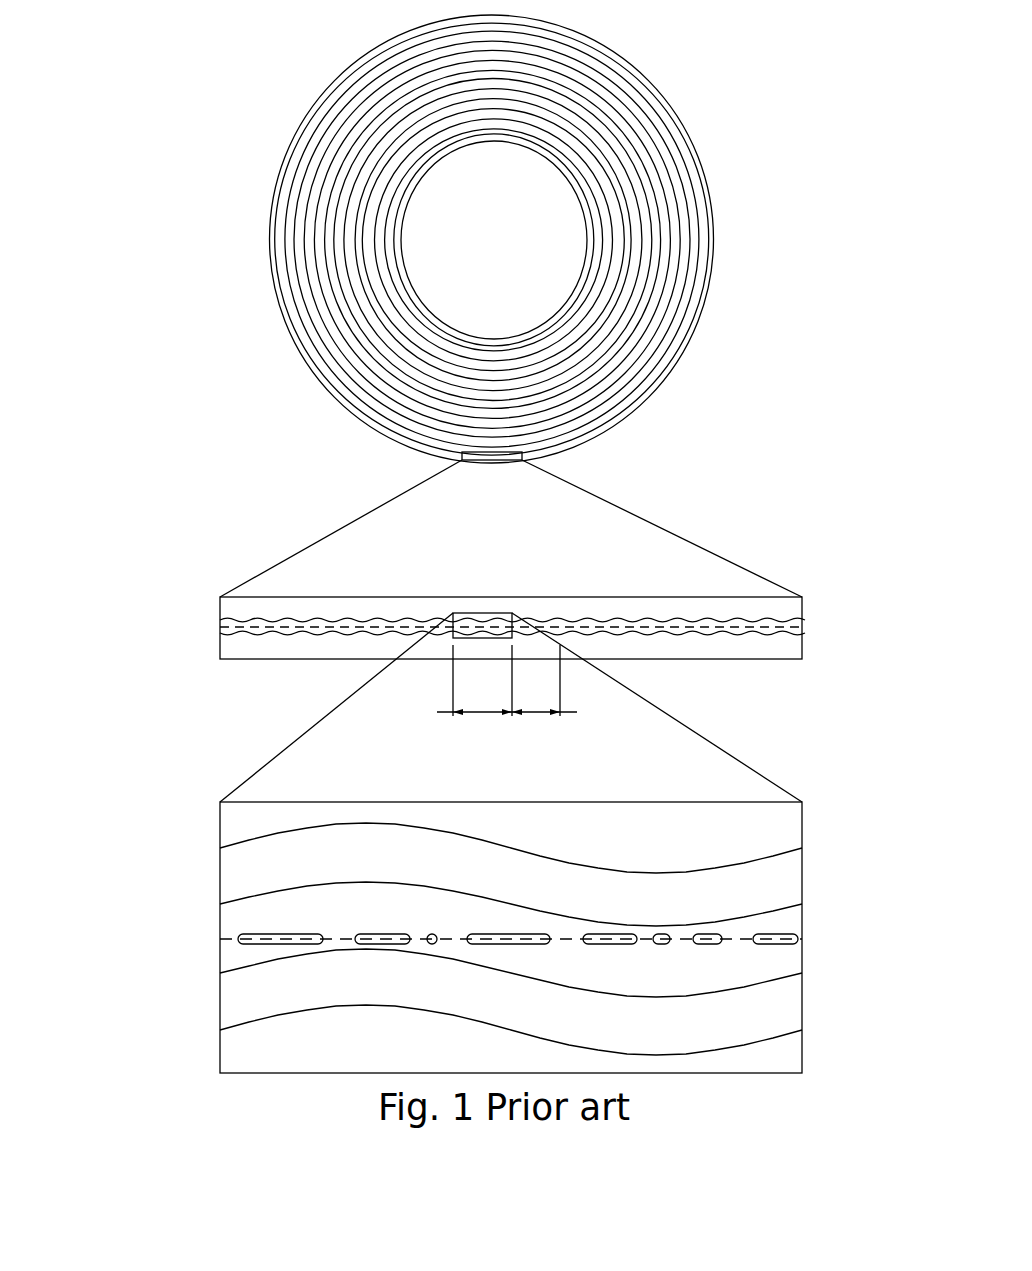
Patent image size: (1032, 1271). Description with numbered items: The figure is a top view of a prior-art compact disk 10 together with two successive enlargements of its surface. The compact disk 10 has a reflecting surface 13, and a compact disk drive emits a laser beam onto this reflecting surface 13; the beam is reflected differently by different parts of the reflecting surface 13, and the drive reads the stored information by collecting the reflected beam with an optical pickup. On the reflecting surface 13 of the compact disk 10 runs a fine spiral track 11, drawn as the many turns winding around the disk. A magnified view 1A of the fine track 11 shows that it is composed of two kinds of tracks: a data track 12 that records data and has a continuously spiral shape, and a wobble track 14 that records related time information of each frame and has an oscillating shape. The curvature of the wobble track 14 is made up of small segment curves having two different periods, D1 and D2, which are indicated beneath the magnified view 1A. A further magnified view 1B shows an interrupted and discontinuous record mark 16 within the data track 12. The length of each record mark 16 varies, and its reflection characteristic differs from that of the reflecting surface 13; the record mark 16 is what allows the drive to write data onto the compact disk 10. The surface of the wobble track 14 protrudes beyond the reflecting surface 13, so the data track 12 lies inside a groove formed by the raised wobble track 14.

The compact disk 10 is at (312, 97).
The fine spiral track 11 is at (393, 428).
The data track 12 is at (218, 619).
The reflecting surface 13 is at (620, 415).
The wobble track 14 is at (277, 618).
The record mark 16 is at (437, 928).
The magnified view 1A is at (805, 600).
The further magnified view 1B is at (800, 826).
The first period D1 is at (507, 680).
The second period D2 is at (536, 680).